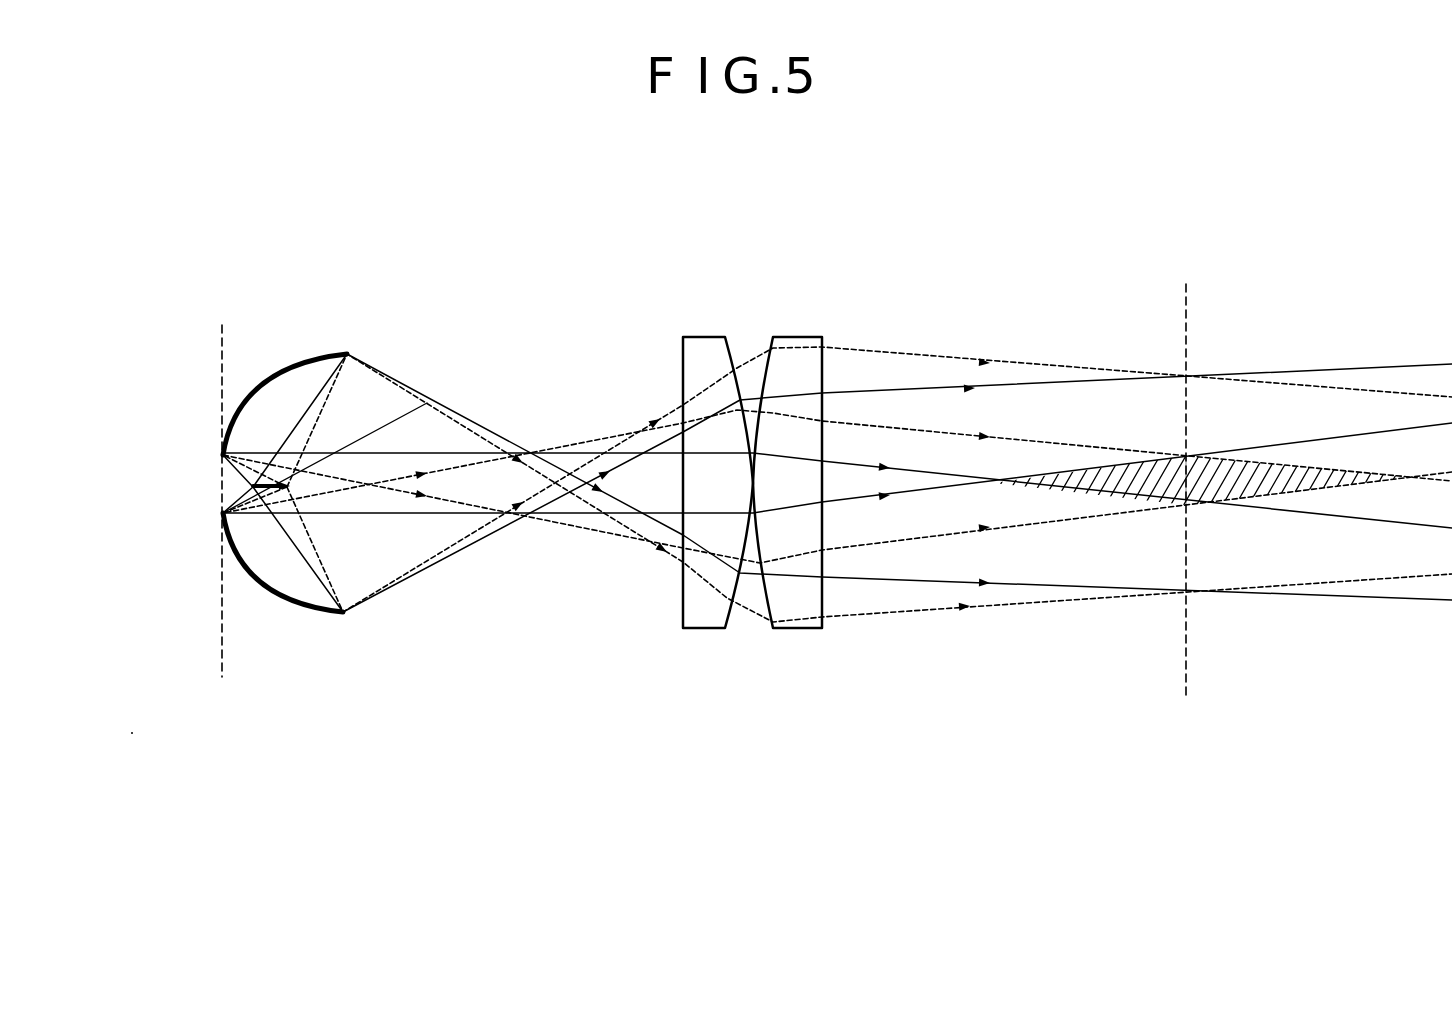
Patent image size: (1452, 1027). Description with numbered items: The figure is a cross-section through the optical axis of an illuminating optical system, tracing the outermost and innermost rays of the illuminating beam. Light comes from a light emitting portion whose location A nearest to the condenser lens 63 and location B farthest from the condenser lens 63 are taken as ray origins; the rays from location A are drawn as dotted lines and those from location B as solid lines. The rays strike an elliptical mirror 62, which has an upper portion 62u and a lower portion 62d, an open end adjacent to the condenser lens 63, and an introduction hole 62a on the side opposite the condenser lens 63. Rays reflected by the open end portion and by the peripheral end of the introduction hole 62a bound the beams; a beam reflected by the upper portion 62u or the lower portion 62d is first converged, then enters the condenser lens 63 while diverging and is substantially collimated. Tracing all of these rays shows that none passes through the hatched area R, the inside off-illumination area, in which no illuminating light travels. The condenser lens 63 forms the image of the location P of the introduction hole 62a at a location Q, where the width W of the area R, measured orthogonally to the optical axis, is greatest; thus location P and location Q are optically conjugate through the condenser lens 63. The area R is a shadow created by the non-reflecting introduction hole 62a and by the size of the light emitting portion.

The elliptical mirror 62 is at (328, 352).
The upper portion of the elliptical mirror 62u is at (312, 361).
The lower portion of the elliptical mirror 62d is at (296, 604).
The introduction hole 62a is at (213, 454).
The condenser lens 63 is at (819, 300).
The location of the introduction hole P is at (222, 650).
The location of greatest width of the inside off-illumination area Q is at (1186, 660).
The inside off-illumination area R is at (1151, 465).
The width of the inside off-illumination area W is at (1190, 468).
The location nearest to the condenser lens in the light emitting portion A is at (427, 403).
The location farthest from the condenser lens in the light emitting portion B is at (252, 486).